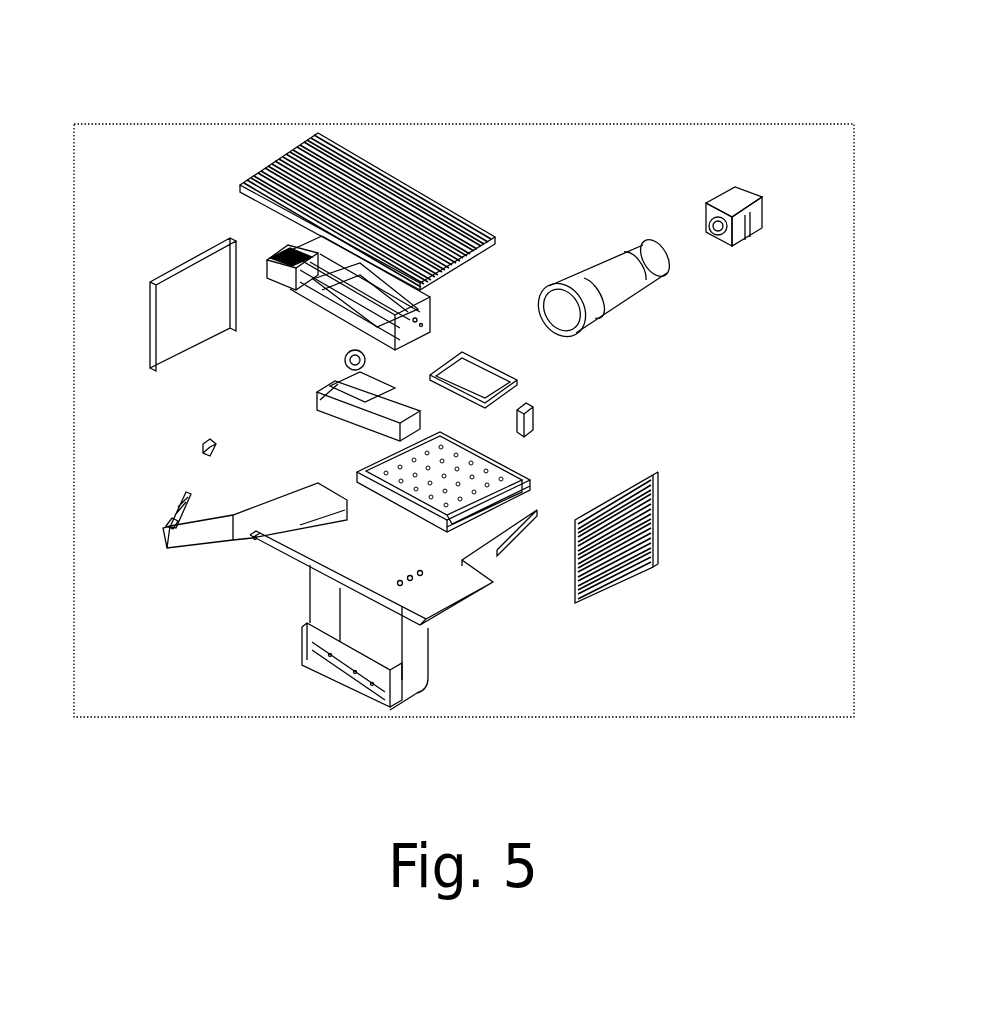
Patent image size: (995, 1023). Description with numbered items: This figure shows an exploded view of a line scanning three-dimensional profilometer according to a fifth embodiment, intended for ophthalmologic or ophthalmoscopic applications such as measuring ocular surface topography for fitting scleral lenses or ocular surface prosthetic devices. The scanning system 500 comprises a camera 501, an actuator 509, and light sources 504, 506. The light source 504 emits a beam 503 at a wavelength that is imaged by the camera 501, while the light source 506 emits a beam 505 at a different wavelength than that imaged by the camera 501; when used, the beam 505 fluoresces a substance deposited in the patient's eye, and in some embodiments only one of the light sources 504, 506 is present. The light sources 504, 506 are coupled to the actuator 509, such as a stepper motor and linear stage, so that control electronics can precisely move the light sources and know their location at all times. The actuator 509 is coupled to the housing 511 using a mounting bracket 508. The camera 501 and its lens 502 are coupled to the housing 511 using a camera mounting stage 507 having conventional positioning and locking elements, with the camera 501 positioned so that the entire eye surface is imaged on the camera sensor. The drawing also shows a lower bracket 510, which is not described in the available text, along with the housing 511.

The scanning system 500 is at (376, 62).
The camera 501 is at (720, 190).
The lens 502 is at (614, 268).
The beam 503 is at (167, 524).
The light source 504 is at (172, 488).
The beam 505 is at (182, 548).
The light source 506 is at (252, 537).
The camera mounting stage 507 is at (532, 487).
The mounting bracket 508 is at (320, 400).
The actuator 509 is at (292, 285).
The mounting bracket 510 is at (328, 668).
The housing 511 is at (441, 206).